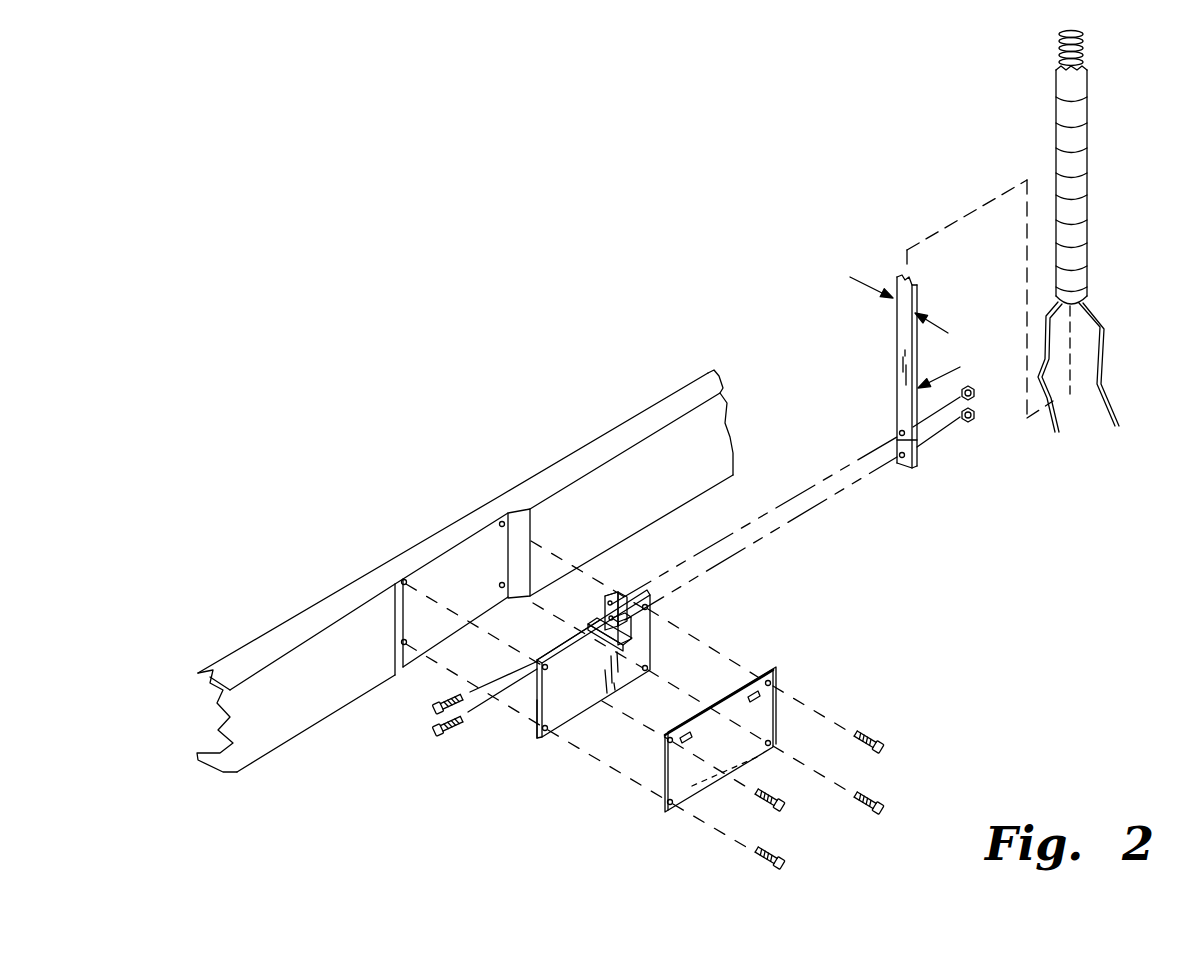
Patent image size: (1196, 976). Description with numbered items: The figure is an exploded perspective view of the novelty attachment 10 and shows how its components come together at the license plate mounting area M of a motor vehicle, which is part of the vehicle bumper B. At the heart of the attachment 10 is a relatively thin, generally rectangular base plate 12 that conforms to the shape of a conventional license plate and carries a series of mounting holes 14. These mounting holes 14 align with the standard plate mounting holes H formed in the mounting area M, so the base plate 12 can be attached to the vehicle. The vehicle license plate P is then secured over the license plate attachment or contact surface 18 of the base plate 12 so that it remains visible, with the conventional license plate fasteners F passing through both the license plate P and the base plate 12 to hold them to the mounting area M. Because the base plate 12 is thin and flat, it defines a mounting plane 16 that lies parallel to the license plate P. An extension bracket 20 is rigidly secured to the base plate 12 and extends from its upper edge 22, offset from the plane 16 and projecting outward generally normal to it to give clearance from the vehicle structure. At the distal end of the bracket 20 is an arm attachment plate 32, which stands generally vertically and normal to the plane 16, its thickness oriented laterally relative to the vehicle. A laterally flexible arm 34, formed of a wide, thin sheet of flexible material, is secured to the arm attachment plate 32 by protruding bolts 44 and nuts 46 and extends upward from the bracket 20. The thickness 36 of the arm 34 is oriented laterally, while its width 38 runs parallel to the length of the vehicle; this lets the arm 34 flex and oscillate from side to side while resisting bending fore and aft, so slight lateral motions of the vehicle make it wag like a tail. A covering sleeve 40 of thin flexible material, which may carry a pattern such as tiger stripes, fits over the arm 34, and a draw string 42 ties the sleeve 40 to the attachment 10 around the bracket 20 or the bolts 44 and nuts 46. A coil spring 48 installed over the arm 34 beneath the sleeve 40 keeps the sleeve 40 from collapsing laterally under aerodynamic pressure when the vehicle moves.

The novelty attachment 10 is at (1055, 625).
The base plate 12 is at (605, 664).
The mounting holes 14 is at (595, 676).
The mounting plane 16 is at (510, 727).
The license plate attachment surface 18 is at (601, 684).
The extension bracket 20 is at (594, 628).
The upper edge 22 is at (551, 632).
The arm attachment plate 32 is at (640, 564).
The laterally flexible arm 34 is at (893, 371).
The thickness 36 is at (892, 405).
The width 38 is at (887, 319).
The sleeve 40 is at (1033, 230).
The draw string 42 is at (1078, 384).
The bolts 44 is at (413, 719).
The nuts 46 is at (989, 425).
The coil spring 48 is at (1035, 52).
The bumper B is at (324, 689).
The license plate mounting area M is at (468, 597).
The plate mounting holes H is at (453, 568).
The license plate P is at (662, 807).
The fasteners F is at (854, 741).